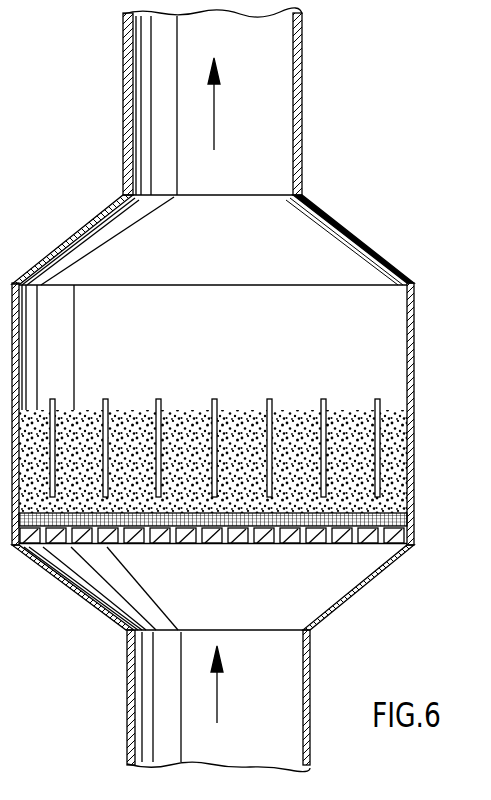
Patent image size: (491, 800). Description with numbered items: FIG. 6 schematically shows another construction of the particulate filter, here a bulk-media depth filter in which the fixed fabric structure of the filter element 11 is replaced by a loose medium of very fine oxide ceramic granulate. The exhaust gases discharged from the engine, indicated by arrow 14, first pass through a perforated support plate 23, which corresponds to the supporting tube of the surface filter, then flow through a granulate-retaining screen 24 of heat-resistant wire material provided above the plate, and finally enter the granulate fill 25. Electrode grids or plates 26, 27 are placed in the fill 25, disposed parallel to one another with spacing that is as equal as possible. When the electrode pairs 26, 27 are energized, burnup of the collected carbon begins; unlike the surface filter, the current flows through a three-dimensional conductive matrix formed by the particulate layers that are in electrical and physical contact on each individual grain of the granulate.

The filter element 11 is at (86, 304).
The arrow 14 is at (215, 117).
The perforated support plate 23 is at (400, 533).
The granulate-retaining screen 24 is at (400, 519).
The granulate fill 25 is at (190, 410).
The electrode grid 26 is at (53, 399).
The electrode grid 27 is at (106, 399).